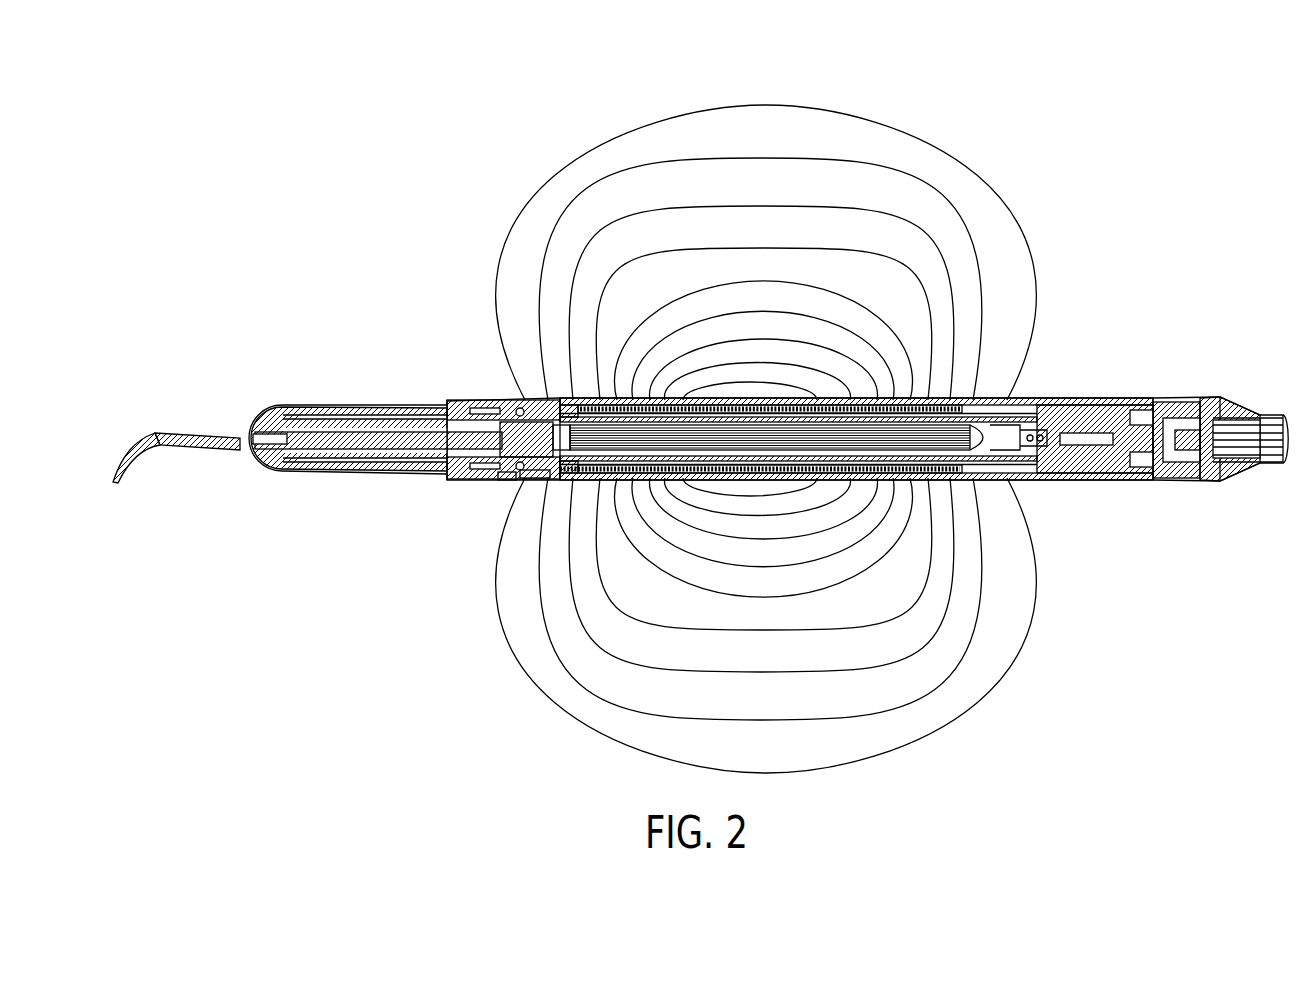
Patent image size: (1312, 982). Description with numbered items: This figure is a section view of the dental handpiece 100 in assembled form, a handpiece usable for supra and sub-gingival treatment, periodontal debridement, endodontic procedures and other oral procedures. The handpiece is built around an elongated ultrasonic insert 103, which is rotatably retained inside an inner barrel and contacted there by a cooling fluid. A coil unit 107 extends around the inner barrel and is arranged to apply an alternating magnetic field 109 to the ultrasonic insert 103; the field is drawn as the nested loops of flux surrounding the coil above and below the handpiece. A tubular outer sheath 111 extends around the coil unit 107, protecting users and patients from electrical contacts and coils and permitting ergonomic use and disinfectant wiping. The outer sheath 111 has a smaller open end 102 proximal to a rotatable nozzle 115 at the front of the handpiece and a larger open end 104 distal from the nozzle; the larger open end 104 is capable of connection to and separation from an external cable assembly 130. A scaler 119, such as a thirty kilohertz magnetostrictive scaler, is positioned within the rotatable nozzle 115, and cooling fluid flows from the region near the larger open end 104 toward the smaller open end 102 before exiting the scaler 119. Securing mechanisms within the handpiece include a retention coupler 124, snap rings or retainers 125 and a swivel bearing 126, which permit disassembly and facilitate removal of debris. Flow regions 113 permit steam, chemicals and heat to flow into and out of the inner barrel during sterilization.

The dental handpiece 100 is at (362, 594).
The smaller open end 102 is at (542, 393).
The ultrasonic insert 103 is at (622, 440).
The larger open end 104 is at (1140, 483).
The coil unit 107 is at (566, 385).
The alternating magnetic field 109 is at (1000, 202).
The outer sheath 111 is at (585, 397).
The flow regions 113 is at (218, 430).
The rotatable nozzle 115 is at (322, 474).
The scaler 119 is at (152, 430).
The retention coupler 124 is at (538, 403).
The snap rings or retainers 125 is at (535, 483).
The swivel bearing 126 is at (567, 393).
The external cable assembly 130 is at (1272, 413).